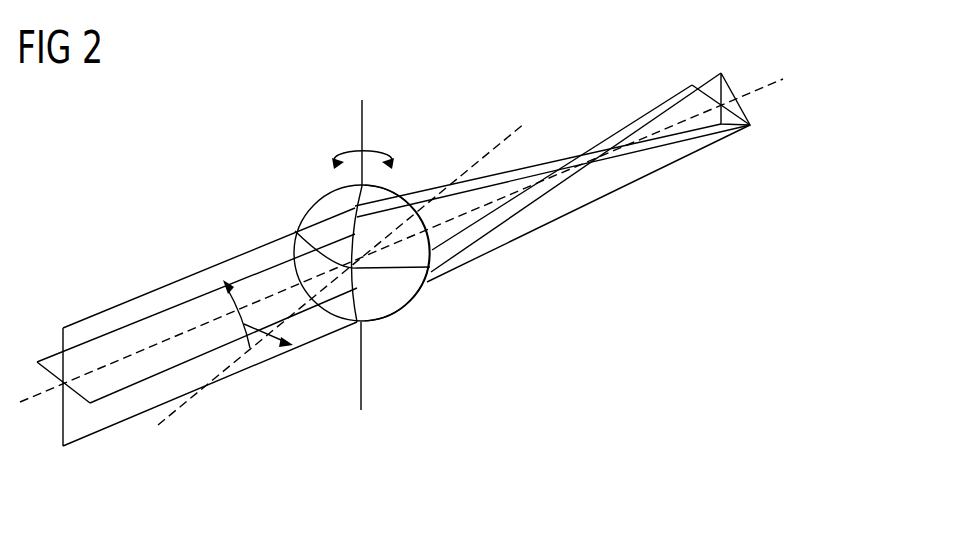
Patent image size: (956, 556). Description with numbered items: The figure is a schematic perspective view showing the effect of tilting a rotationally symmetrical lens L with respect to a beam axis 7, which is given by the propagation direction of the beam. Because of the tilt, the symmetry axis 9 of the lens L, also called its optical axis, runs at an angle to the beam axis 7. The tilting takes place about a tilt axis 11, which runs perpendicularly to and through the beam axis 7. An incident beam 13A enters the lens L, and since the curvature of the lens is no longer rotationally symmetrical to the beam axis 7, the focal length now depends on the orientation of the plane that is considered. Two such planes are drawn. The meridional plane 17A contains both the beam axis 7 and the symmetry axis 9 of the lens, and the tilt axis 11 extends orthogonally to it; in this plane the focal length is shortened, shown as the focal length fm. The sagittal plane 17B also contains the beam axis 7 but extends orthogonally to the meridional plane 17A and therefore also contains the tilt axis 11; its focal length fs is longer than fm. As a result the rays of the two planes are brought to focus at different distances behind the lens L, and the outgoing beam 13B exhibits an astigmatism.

The beam axis 7 is at (765, 86).
The symmetry axis 9 is at (183, 401).
The tilt axis 11 is at (362, 117).
The lens L is at (398, 303).
The incident beam 13A is at (197, 320).
The outgoing beam 13B is at (552, 150).
The meridional plane 17A is at (113, 331).
The sagittal plane 17B is at (88, 440).
The focal length in the meridional plane fm is at (578, 208).
The focal length in the sagittal plane fs is at (642, 180).